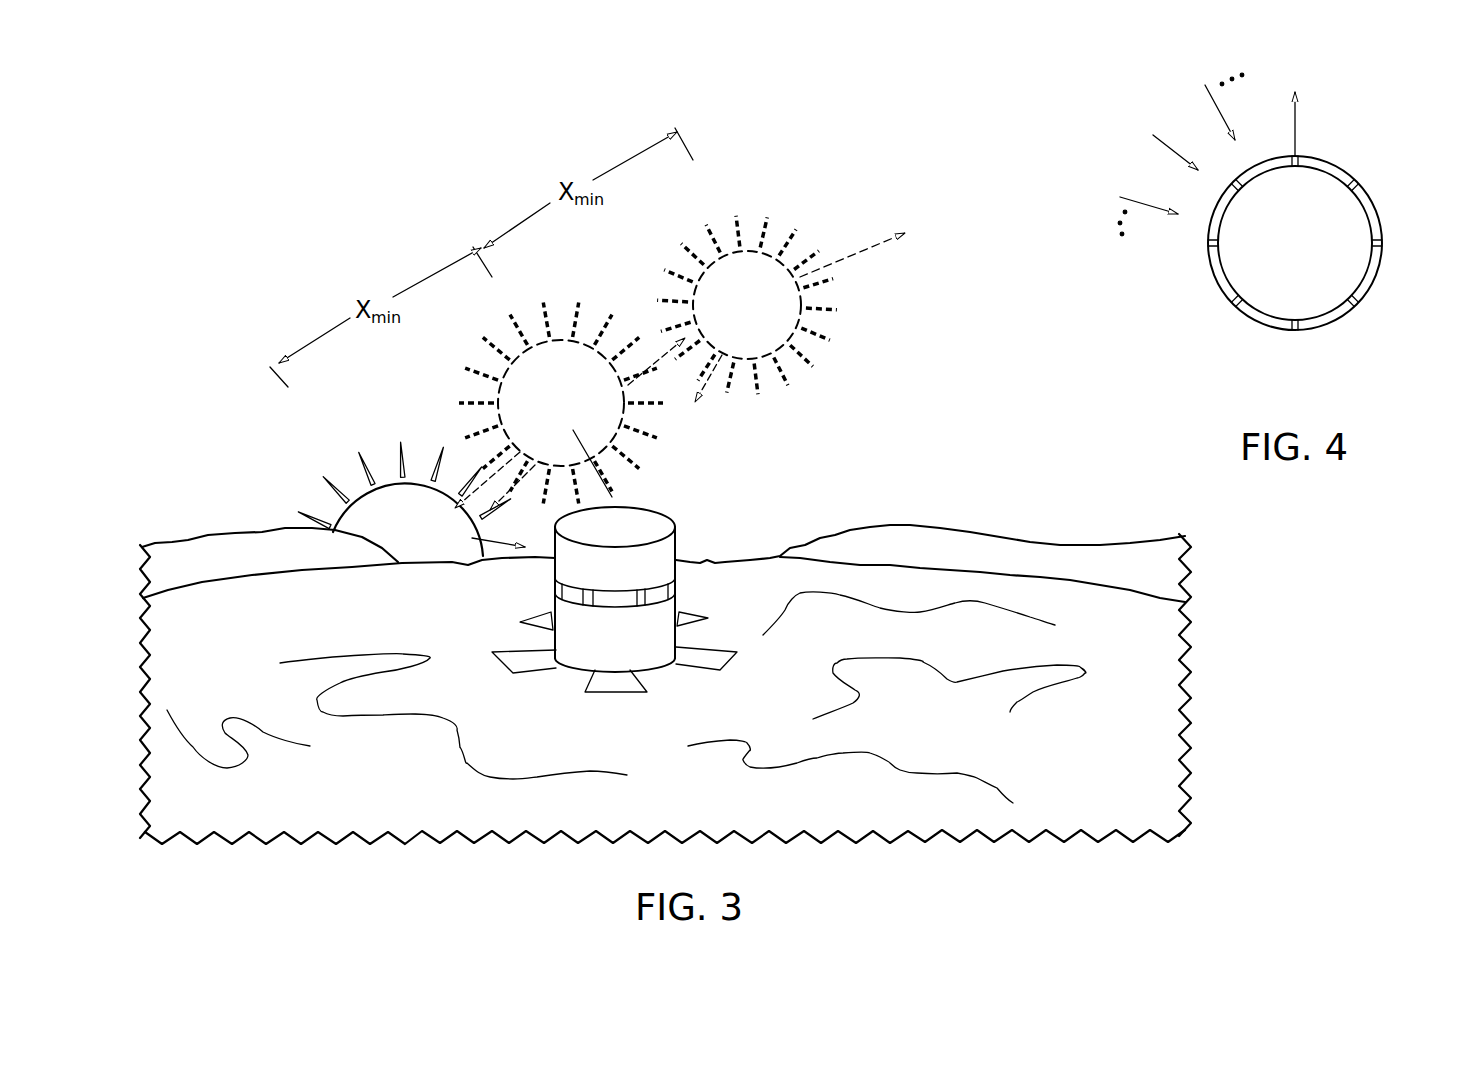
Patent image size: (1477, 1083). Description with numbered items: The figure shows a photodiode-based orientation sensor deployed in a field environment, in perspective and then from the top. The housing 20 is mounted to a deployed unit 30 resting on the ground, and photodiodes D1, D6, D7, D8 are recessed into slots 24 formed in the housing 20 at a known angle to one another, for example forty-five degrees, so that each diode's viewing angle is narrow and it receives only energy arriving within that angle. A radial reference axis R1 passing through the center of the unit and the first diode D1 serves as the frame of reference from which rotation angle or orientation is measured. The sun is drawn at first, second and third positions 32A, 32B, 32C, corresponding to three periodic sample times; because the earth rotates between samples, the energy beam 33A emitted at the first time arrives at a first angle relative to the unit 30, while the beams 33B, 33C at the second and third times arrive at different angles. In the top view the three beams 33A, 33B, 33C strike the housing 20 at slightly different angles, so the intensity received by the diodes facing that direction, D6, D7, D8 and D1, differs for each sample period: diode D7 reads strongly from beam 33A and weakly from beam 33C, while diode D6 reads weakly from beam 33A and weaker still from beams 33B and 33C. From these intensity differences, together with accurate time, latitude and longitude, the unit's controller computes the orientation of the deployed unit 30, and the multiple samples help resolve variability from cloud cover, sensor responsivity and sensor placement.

In FIG. 3, the housing 20 is at (622, 607).
In FIG. 4, the housing 20 is at (1382, 214).
In FIG. 3, the slots 24 is at (639, 592).
In FIG. 4, the slots 24 is at (1295, 332).
In FIG. 3, the unit 30 is at (582, 663).
In FIG. 4, the unit 30 is at (1352, 158).
In FIG. 3, the sun at first position 32A is at (378, 486).
In FIG. 3, the sun at second position 32B is at (562, 339).
In FIG. 3, the sun at third position 32C is at (748, 251).
In FIG. 3, the energy beam 33A is at (485, 553).
In FIG. 4, the energy beam 33A is at (1160, 212).
In FIG. 3, the energy beam 33B is at (590, 456).
In FIG. 4, the energy beam 33B is at (1178, 160).
In FIG. 3, the energy beam 33C is at (717, 377).
In FIG. 4, the energy beam 33C is at (1210, 107).
In FIG. 4, the reference axis R1 is at (1297, 122).
In FIG. 4, the photodiode D1 is at (1297, 168).
In FIG. 4, the photodiode D6 is at (1241, 300).
In FIG. 4, the photodiode D7 is at (1220, 243).
In FIG. 4, the photodiode D8 is at (1241, 186).